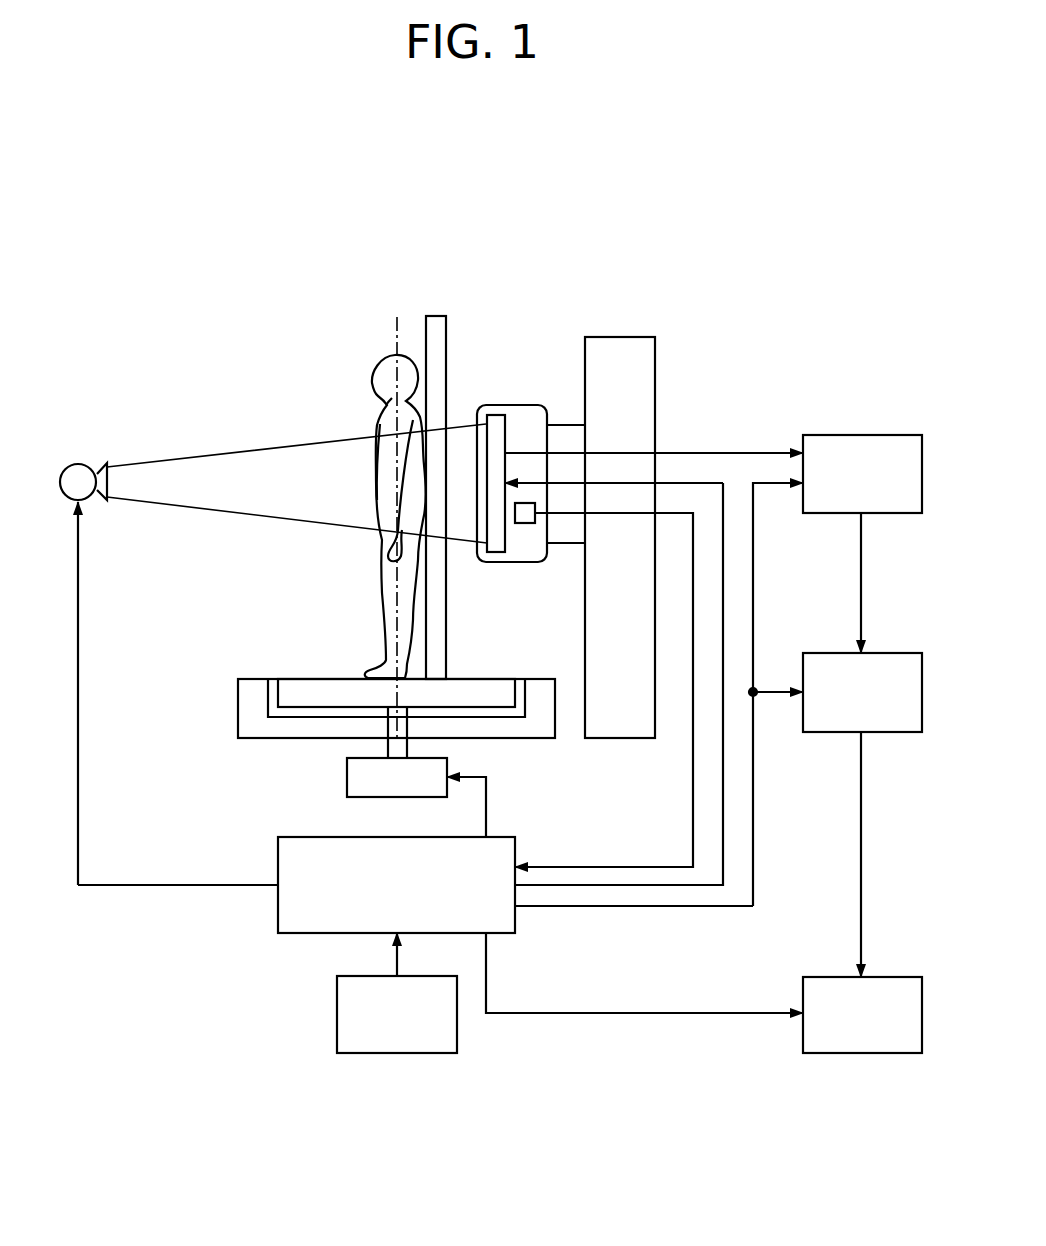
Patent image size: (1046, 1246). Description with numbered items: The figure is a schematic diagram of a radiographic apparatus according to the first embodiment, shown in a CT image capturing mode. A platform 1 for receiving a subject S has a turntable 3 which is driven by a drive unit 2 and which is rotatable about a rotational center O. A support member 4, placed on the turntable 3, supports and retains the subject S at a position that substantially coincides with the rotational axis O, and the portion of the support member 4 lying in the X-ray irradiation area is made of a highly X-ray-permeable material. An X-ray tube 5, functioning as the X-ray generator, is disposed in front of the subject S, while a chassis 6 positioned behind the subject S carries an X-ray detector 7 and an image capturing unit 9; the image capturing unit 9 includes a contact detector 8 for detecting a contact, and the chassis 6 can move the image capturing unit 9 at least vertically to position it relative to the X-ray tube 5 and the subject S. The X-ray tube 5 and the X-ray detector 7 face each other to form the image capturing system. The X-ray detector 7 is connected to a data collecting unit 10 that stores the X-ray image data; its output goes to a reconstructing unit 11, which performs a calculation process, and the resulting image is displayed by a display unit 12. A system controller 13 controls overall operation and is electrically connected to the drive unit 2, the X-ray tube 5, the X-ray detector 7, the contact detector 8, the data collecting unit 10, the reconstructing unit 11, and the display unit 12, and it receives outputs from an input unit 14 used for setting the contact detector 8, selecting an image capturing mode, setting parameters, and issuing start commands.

The platform 1 is at (250, 698).
The drive unit 2 is at (355, 776).
The turntable 3 is at (303, 688).
The support member 4 is at (437, 326).
The X-ray tube 5 is at (78, 464).
The chassis 6 is at (619, 345).
The X-ray detector 7 is at (496, 414).
The contact detector 8 is at (524, 524).
The image capturing unit 9 is at (530, 405).
The data collecting unit 10 is at (871, 441).
The reconstructing unit 11 is at (897, 672).
The display unit 12 is at (900, 985).
The system controller 13 is at (295, 858).
The input unit 14 is at (355, 994).
The rotational center O is at (396, 330).
The subject S is at (382, 418).